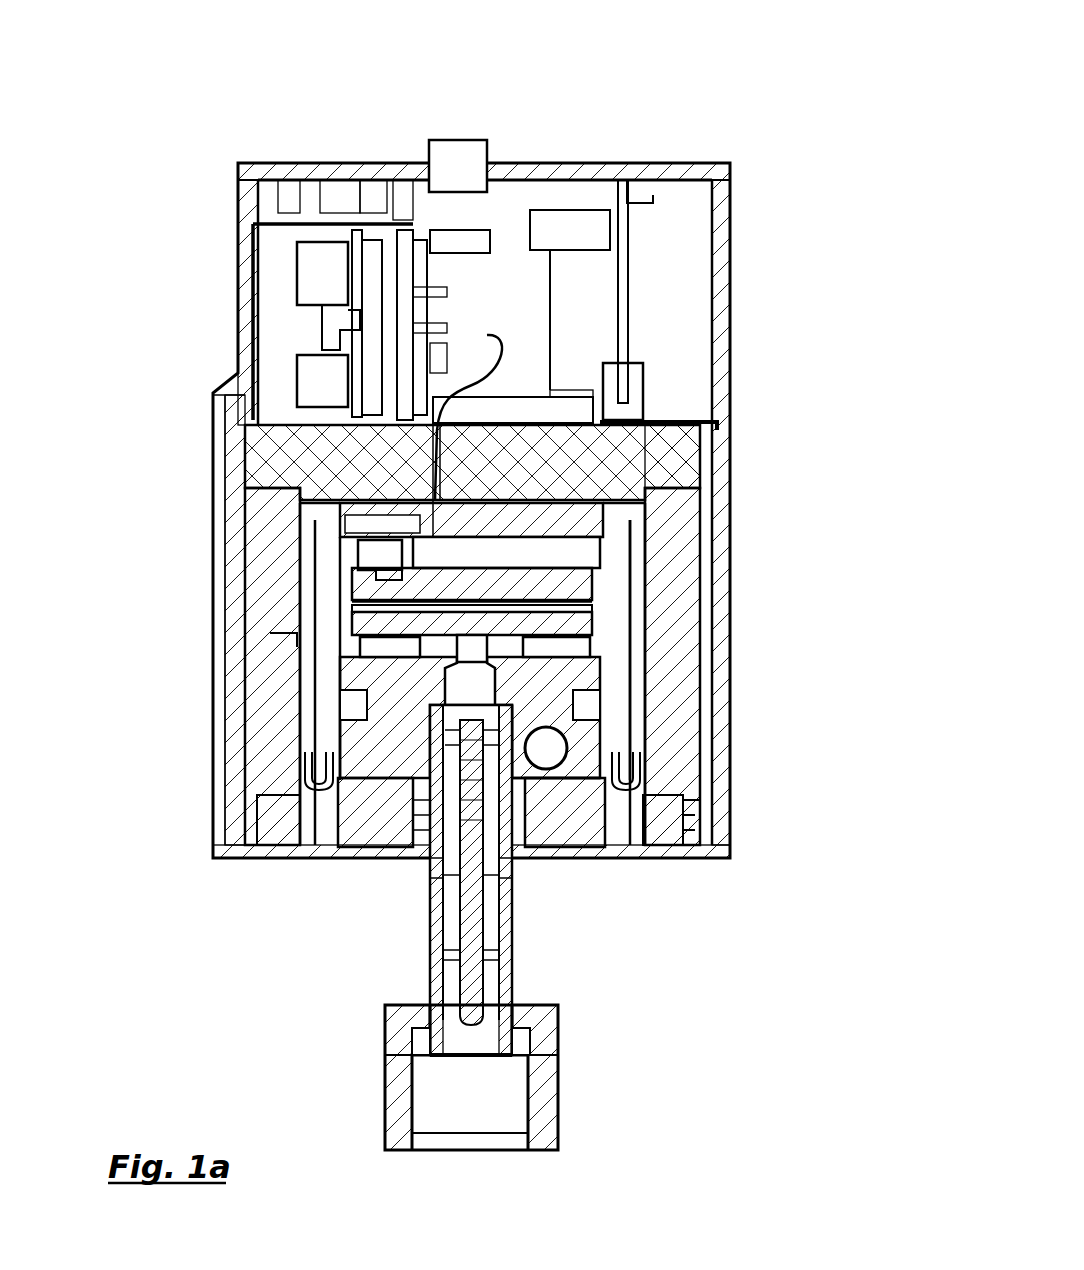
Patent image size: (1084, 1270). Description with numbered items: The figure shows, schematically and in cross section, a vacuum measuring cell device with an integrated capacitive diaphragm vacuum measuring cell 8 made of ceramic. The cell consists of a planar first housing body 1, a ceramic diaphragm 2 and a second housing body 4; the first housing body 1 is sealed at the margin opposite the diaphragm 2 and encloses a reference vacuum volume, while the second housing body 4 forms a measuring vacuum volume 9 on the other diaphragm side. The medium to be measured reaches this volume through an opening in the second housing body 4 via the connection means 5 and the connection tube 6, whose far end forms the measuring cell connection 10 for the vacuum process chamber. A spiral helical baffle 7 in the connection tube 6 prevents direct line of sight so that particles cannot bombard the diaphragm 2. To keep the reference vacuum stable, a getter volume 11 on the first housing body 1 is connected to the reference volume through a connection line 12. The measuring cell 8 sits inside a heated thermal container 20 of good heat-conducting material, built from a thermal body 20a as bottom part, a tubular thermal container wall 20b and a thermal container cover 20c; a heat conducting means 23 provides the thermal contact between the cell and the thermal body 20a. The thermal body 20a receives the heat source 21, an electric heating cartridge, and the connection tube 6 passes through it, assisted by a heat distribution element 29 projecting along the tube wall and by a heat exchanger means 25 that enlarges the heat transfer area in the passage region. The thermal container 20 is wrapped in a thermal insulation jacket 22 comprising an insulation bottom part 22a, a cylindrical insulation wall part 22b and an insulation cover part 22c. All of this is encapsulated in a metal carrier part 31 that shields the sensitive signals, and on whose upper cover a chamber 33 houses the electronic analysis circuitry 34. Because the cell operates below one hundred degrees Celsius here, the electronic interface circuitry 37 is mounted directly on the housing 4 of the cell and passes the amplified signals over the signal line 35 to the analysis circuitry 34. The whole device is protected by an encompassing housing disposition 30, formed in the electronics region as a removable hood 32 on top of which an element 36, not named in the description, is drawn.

The first housing body 1 is at (402, 587).
The ceramic diaphragm 2 is at (438, 598).
The second housing body 4 is at (402, 622).
The connection means 5 is at (463, 647).
The connection tube 6 is at (440, 908).
The baffle 7 is at (475, 825).
The diaphragm vacuum measuring cell 8 is at (590, 580).
The measuring vacuum volume 9 is at (413, 612).
The measuring cell connection 10 is at (403, 1017).
The getter volume 11 is at (387, 575).
The connection line 12 is at (380, 552).
The thermal container 20 is at (585, 730).
The thermal body 20a is at (595, 753).
The thermal container wall 20b is at (640, 633).
The thermal container cover 20c is at (583, 513).
The heat source 21 is at (547, 753).
The thermal insulation jacket 22 is at (340, 455).
The insulation bottom part 22a is at (700, 850).
The insulation wall part 22b is at (677, 610).
The insulation cover part 22c is at (677, 467).
The heat conducting means 23 is at (558, 647).
The heat exchanger means 25 is at (430, 767).
The heat distribution element 29 is at (422, 813).
The housing disposition 30 is at (730, 250).
The carrier part 31 is at (677, 432).
The removable hood 32 is at (630, 165).
The chamber 33 is at (501, 310).
The electronic analysis circuitry 34 is at (295, 335).
The signal line 35 is at (487, 335).
The push button 36 is at (462, 170).
The electronic interface circuitry 37 is at (497, 560).